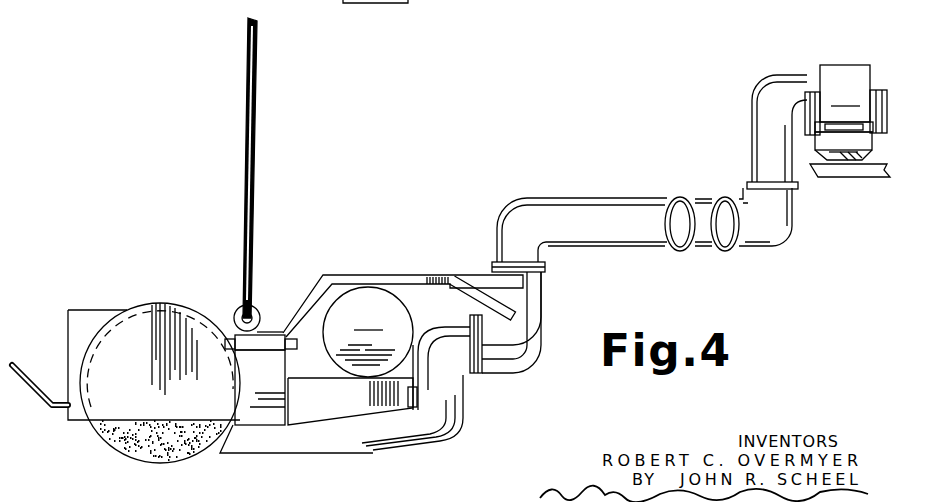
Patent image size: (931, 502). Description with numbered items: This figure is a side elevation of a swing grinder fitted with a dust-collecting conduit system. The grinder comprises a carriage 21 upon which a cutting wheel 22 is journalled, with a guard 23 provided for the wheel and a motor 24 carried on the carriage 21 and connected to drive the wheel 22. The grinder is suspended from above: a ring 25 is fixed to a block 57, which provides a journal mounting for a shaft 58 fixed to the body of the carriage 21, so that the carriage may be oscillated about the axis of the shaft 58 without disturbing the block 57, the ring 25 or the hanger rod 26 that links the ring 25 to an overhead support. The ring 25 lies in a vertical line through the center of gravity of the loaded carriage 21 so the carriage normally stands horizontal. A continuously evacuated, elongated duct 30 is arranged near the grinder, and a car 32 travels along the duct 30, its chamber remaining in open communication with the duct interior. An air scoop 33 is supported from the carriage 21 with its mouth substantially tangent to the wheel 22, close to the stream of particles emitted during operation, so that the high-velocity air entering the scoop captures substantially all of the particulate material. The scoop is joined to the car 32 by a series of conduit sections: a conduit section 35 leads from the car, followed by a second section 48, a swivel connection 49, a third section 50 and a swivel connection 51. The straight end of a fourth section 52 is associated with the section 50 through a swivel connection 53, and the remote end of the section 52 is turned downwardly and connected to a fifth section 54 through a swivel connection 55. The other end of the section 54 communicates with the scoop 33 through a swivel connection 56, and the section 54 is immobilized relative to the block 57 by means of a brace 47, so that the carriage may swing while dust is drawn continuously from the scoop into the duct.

The carriage 21 is at (273, 316).
The cutting wheel 22 is at (186, 452).
The guard 23 is at (120, 310).
The motor 24 is at (318, 370).
The ring 25 is at (238, 308).
The hanger rod 26 is at (252, 183).
The duct 30 is at (850, 153).
The car 32 is at (846, 100).
The air scoop 33 is at (375, 438).
The conduit section 35 is at (752, 118).
The brace 47 is at (404, 275).
The second section 48 is at (789, 219).
The swivel connection 49 is at (799, 186).
The third section 50 is at (701, 251).
The swivel connection 51 is at (729, 251).
The fourth section 52 is at (612, 212).
The swivel connection 53 is at (678, 197).
The fifth section 54 is at (535, 314).
The swivel connection 55 is at (547, 268).
The swivel connection 56 is at (478, 375).
The block 57 is at (261, 346).
The shaft 58 is at (297, 344).